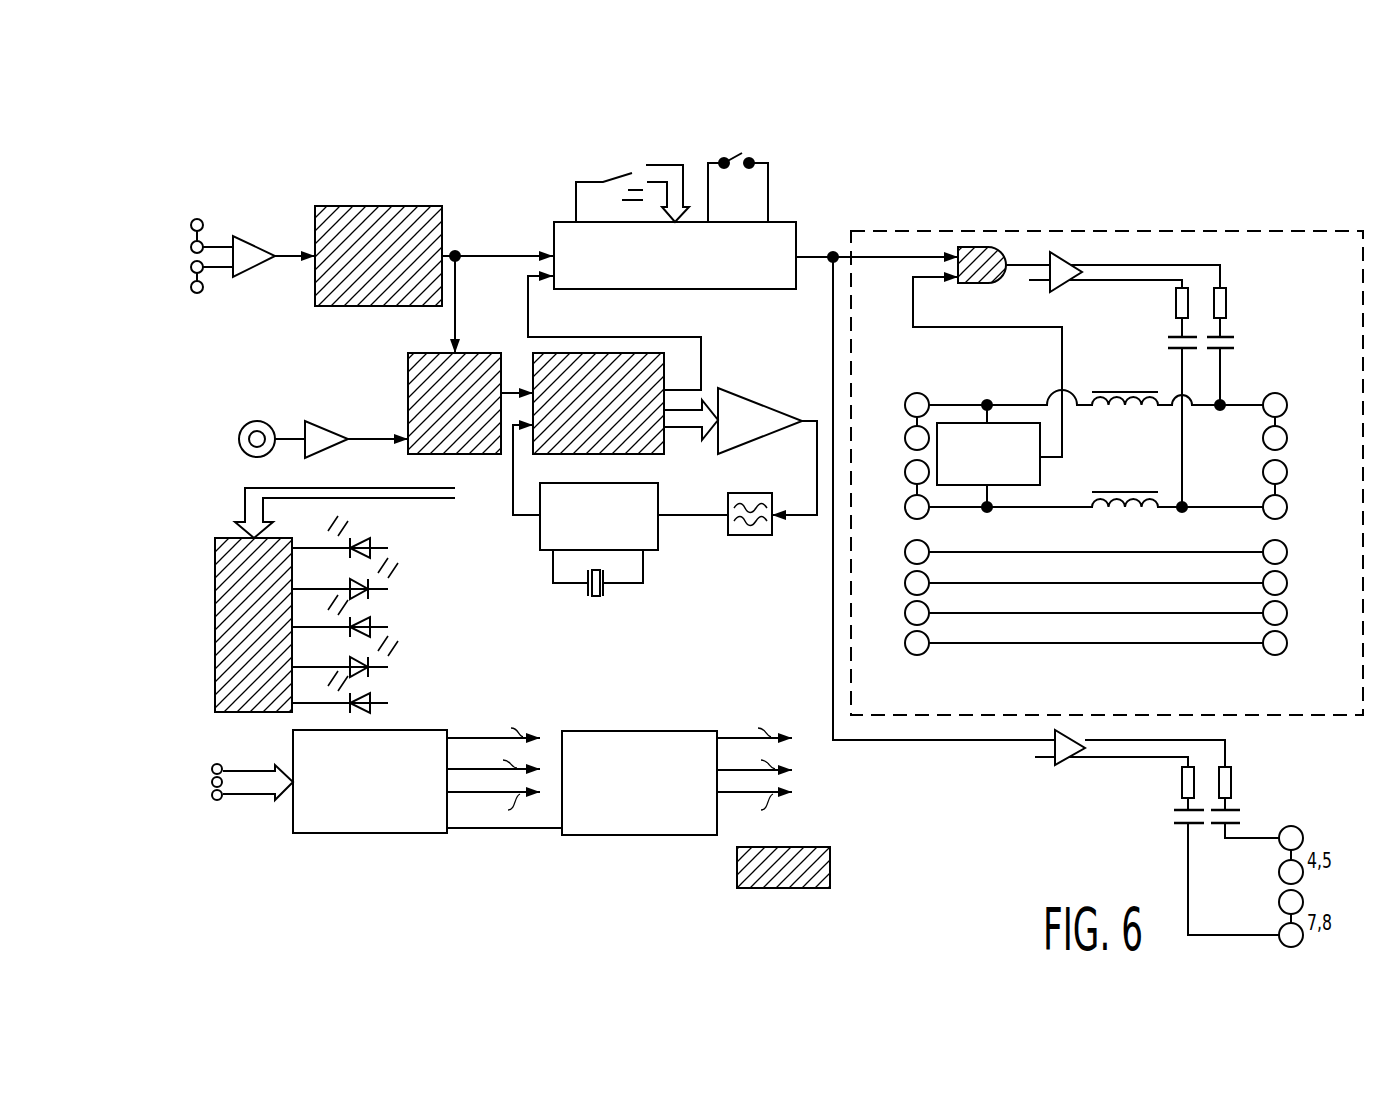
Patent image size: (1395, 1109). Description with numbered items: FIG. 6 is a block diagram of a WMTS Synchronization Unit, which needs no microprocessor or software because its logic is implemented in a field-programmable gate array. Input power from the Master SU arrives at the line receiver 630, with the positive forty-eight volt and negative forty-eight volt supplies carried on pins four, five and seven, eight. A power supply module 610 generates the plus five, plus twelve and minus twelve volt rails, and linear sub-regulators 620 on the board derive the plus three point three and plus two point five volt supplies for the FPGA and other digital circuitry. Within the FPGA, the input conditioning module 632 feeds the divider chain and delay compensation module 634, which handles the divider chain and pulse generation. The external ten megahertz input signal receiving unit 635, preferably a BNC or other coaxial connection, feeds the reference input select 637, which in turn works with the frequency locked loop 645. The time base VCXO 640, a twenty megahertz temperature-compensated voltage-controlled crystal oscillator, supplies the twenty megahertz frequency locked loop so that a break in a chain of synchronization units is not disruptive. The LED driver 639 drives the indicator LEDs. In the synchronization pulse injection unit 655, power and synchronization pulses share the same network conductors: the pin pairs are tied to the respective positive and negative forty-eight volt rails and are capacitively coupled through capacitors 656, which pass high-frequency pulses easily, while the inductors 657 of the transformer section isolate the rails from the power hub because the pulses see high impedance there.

The power supply module 610 is at (293, 812).
The linear sub-regulators 620 is at (662, 731).
The line receiver 630 is at (197, 219).
The input conditioning module 632 is at (370, 206).
The divider chain and delay compensation module 634 is at (553, 235).
The external 10 MHz input signal receiving unit 635 is at (255, 421).
The reference input select 637 is at (470, 353).
The LED driver 639 is at (215, 560).
The time base VCXO 640 is at (658, 530).
The frequency locked loop 645 is at (664, 440).
The synchronization pulse injection unit 655 is at (1328, 231).
The capacitors 656 is at (1176, 335).
The transformer 657 is at (1128, 492).